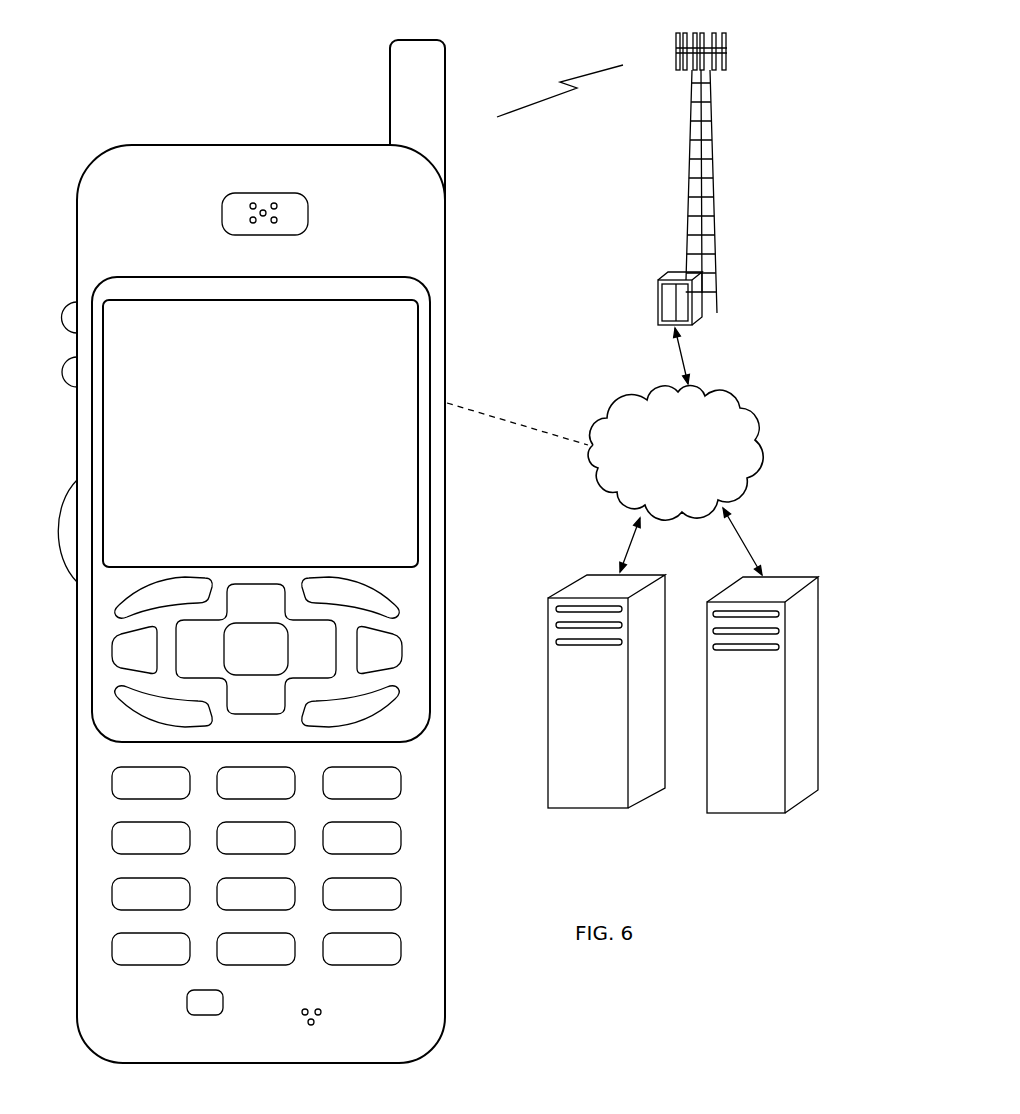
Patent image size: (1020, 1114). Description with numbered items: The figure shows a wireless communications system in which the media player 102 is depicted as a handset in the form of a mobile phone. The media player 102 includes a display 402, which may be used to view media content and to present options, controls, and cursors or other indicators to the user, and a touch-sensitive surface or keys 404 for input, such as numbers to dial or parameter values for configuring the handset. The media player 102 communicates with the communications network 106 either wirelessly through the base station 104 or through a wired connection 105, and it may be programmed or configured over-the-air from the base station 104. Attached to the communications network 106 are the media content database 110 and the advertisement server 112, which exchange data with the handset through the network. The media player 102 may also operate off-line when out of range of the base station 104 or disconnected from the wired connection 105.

The media player 102 is at (280, 564).
The base station 104 is at (688, 192).
The wired connection 105 is at (480, 412).
The communications network 106 is at (604, 498).
The media content database 110 is at (747, 813).
The advertisement server 112 is at (589, 808).
The display 402 is at (418, 312).
The keys 404 is at (450, 973).